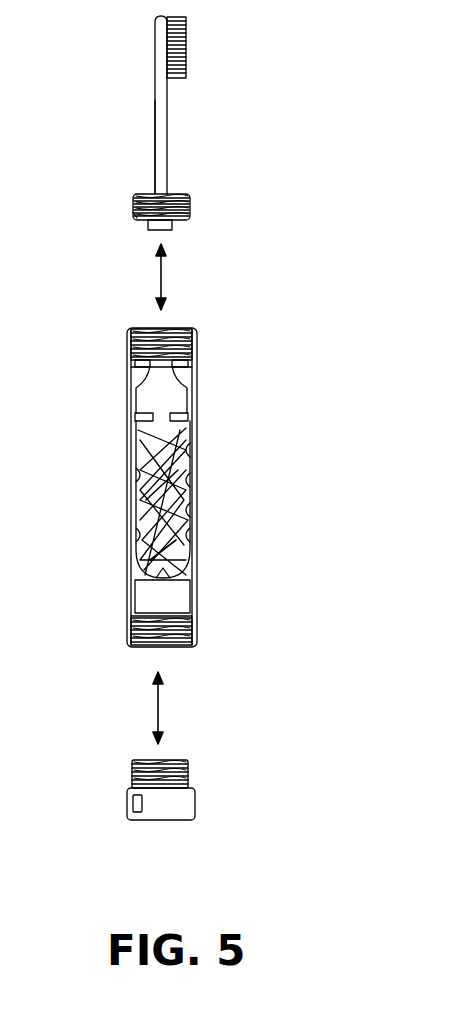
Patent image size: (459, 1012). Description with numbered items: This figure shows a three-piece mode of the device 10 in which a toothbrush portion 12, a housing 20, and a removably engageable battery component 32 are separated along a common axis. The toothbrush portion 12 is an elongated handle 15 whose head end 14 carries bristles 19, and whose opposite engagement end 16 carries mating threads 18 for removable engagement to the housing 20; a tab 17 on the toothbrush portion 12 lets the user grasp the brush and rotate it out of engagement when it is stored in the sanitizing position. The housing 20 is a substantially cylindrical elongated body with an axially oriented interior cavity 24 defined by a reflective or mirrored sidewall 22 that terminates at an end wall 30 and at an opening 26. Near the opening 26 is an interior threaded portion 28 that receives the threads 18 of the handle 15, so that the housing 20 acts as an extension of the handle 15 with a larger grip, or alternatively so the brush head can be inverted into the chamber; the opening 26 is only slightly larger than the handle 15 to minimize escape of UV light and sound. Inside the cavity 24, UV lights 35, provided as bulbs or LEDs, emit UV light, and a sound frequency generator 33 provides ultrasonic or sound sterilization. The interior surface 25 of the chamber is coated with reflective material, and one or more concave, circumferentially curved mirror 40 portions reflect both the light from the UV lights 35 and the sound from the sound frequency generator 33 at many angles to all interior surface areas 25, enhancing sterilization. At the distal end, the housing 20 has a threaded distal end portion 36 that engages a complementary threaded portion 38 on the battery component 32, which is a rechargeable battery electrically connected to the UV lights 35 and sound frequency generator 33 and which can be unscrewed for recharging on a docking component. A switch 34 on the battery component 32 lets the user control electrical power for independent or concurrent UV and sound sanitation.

The device 10 is at (287, 185).
The toothbrush portion 12 is at (155, 148).
The head end 14 is at (156, 63).
The handle 15 is at (167, 107).
The engagement end 16 is at (190, 196).
The tab 17 is at (173, 226).
The mating threads 18 is at (134, 212).
The bristles 19 is at (184, 50).
The housing 20 is at (196, 401).
The sidewall 22 is at (131, 512).
The interior cavity 24 is at (176, 498).
The interior surface 25 is at (136, 420).
The opening 26 is at (166, 418).
The interior threaded portion 28 is at (176, 330).
The end wall 30 is at (138, 612).
The battery component 32 is at (196, 813).
The sound frequency generator 33 is at (178, 571).
The switch 34 is at (136, 800).
The UV lights 35 is at (138, 476).
The threaded distal end portion 36 is at (193, 645).
The threaded portion 38 is at (190, 774).
The curved mirror 40 is at (132, 367).